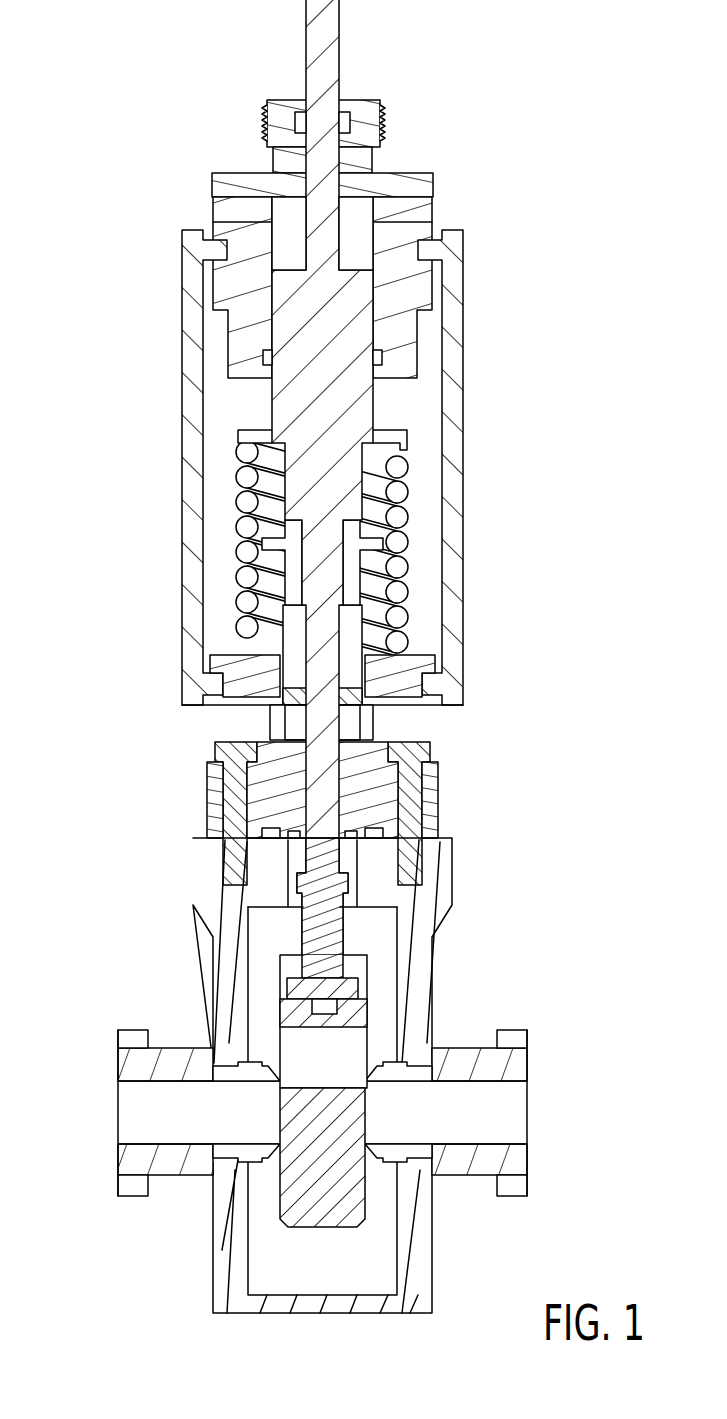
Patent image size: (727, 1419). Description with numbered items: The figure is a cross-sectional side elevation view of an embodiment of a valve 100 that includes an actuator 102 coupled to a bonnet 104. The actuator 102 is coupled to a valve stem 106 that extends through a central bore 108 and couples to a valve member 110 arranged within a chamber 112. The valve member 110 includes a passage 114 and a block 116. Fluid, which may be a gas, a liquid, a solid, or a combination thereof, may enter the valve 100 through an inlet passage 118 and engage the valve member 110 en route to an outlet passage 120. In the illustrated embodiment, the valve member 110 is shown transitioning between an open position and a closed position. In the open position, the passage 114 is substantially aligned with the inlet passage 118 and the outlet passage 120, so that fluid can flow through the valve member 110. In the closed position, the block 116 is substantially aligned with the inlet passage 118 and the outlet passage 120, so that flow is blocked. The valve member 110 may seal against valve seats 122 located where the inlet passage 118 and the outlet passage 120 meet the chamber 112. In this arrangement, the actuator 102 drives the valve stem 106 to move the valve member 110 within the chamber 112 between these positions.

The valve 100 is at (315, 656).
The actuator 102 is at (128, 334).
The bonnet 104 is at (462, 796).
The valve stem 106 is at (322, 725).
The central bore 108 is at (362, 887).
The valve member 110 is at (332, 1075).
The chamber 112 is at (363, 1250).
The passage 114 is at (390, 1099).
The block 116 is at (367, 1192).
The inlet passage 118 is at (165, 1144).
The outlet passage 120 is at (527, 1128).
The valve seats 122 is at (242, 1062).